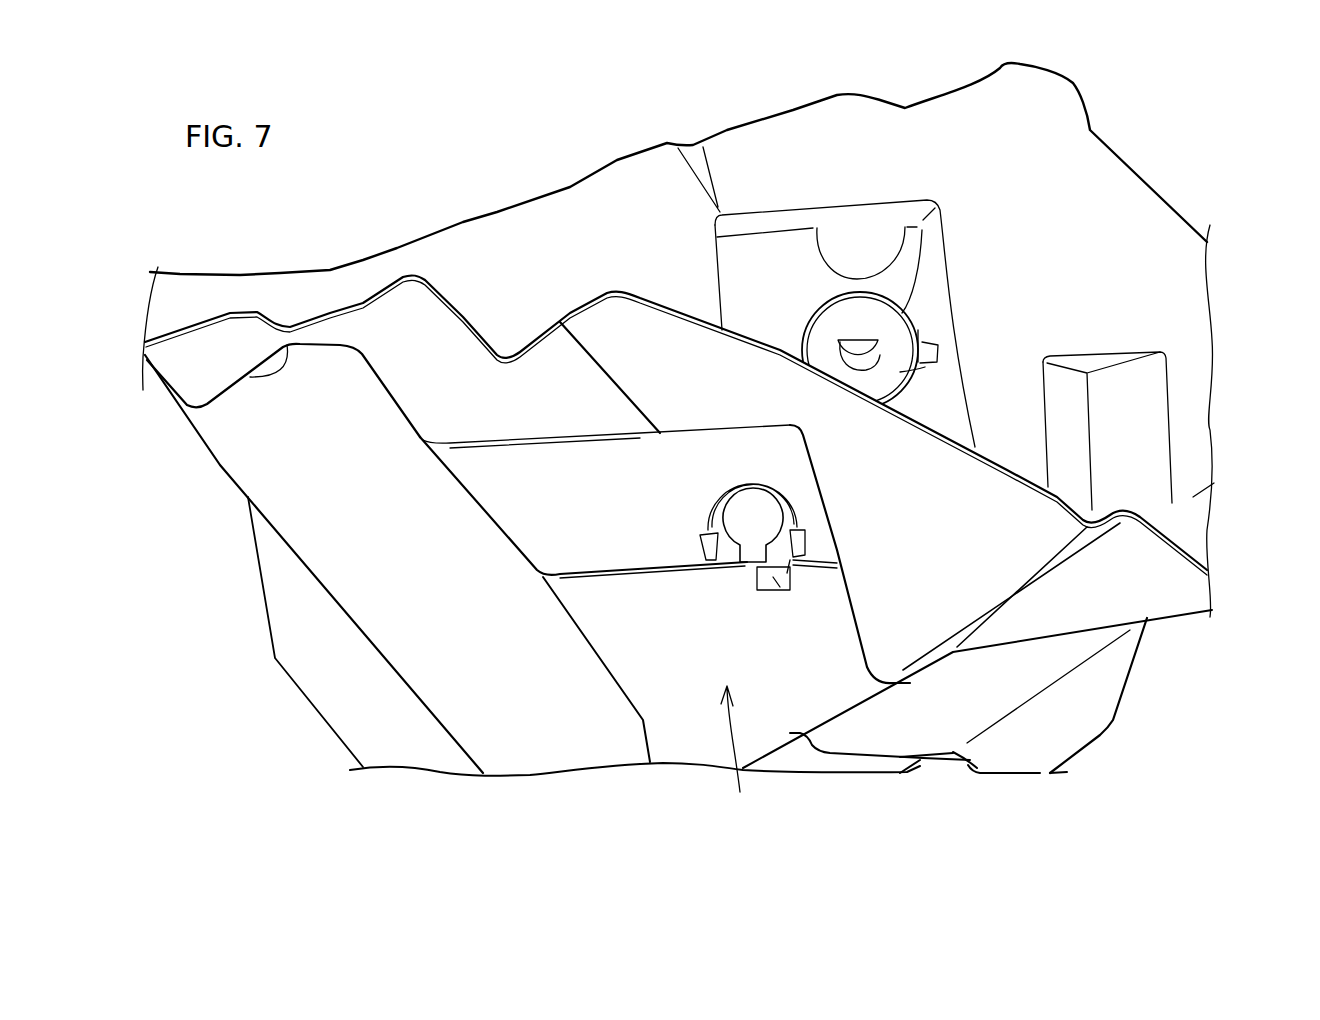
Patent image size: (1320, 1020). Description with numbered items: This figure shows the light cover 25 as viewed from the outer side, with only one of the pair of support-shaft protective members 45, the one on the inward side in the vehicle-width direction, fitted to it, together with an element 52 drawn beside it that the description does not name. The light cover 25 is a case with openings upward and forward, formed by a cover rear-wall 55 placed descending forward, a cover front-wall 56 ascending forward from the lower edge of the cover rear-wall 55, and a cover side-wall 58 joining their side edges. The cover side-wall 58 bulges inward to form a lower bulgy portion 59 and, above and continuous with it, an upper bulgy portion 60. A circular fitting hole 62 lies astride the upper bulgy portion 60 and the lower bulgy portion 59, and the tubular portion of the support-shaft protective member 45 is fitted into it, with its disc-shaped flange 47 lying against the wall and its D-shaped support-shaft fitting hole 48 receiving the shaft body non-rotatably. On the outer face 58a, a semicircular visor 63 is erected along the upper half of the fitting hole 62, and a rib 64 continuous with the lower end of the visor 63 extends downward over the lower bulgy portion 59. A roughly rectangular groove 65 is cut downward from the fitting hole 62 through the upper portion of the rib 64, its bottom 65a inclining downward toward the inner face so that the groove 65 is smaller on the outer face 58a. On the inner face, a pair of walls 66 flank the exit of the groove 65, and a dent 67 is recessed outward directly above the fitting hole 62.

The light cover 25 is at (500, 212).
The support-shaft protective member 45 is at (880, 295).
The disc-shaped flange 47 is at (925, 368).
The support-shaft fitting hole 48 is at (875, 350).
The boss 52 is at (983, 497).
The cover rear-wall 55 is at (220, 463).
The cover front-wall 56 is at (1133, 677).
The cover side-wall 58 is at (1035, 195).
The outer face 58a is at (635, 627).
The lower bulgy portion 59 is at (927, 402).
The upper bulgy portion 60 is at (763, 260).
The fitting hole 62 is at (730, 560).
The visor 63 is at (727, 510).
The rib 64 is at (780, 583).
The groove 65 is at (758, 570).
The bottom 65a is at (773, 583).
The wall 66 is at (902, 313).
The dent 67 is at (857, 233).